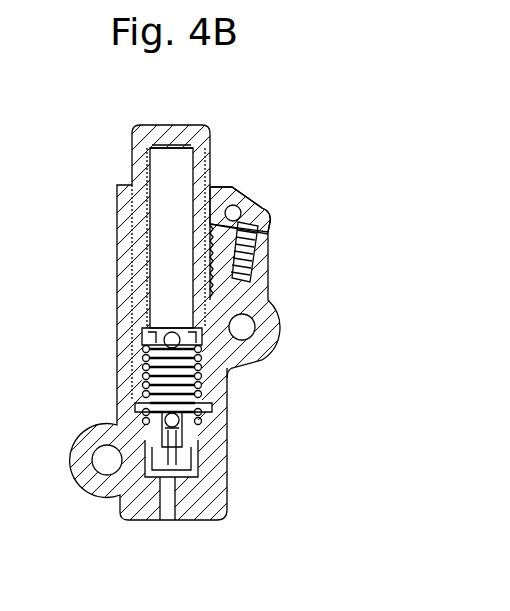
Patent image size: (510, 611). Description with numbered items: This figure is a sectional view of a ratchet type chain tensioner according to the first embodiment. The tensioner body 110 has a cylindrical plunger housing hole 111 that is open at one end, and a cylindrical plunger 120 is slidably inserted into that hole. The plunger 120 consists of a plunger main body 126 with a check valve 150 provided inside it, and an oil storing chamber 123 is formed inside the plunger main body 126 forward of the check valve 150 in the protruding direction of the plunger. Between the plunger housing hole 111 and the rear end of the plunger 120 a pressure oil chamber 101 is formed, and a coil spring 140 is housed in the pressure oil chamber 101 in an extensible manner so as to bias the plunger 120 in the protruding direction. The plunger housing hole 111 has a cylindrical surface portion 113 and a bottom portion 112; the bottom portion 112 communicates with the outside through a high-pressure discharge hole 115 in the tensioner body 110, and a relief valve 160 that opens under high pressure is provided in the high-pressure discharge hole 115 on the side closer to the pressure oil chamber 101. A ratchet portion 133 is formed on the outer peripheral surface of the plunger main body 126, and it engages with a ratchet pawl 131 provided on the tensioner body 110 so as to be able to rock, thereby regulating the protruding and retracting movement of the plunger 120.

The tensioner body 110 is at (117, 230).
The plunger 120 is at (48, 247).
The plunger main body 126 is at (167, 252).
The oil storing chamber 123 is at (147, 283).
The check valve 150 is at (142, 338).
The coil spring 140 is at (147, 403).
The pressure oil chamber 101 is at (127, 433).
The ratchet pawl 131 is at (262, 202).
The ratchet portion 133 is at (250, 290).
The plunger housing hole 111 is at (318, 362).
The cylindrical surface portion 113 is at (205, 383).
The bottom portion 112 is at (195, 424).
The relief valve 160 is at (200, 460).
The high-pressure discharge hole 115 is at (179, 522).